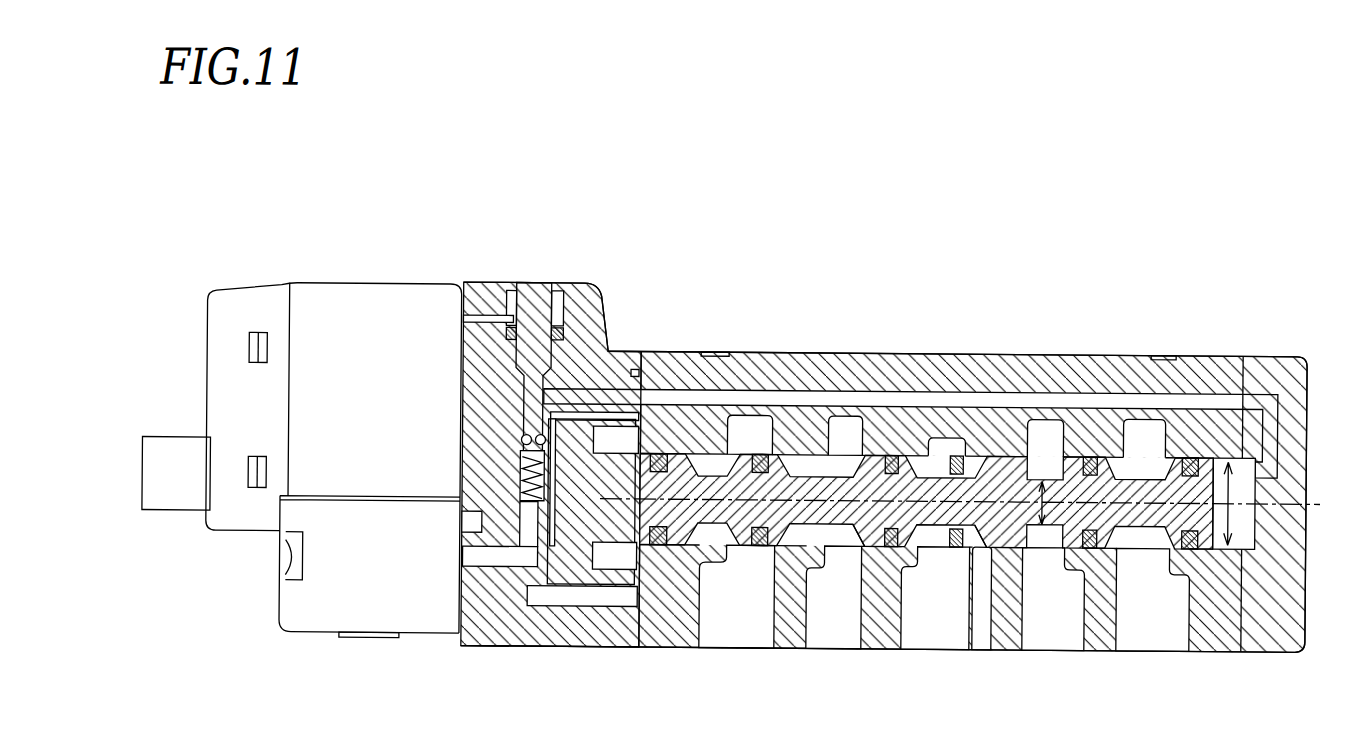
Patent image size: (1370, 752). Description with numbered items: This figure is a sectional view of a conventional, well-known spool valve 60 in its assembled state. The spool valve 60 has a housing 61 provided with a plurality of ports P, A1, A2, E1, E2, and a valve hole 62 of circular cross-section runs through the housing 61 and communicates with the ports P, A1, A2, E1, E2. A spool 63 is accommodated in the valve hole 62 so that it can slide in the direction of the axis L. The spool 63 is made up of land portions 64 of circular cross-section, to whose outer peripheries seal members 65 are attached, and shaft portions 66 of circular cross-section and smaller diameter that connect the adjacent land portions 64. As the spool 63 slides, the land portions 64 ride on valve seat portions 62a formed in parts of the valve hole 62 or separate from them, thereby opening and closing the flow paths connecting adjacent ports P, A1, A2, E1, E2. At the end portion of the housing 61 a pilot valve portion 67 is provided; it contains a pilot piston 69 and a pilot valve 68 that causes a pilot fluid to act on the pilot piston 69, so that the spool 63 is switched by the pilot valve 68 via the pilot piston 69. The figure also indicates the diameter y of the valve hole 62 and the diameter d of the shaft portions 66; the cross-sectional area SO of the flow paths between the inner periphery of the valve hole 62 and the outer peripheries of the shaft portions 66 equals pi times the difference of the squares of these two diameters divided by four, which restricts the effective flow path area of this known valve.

The spool valve 60 is at (1165, 115).
The housing 61 is at (948, 362).
The valve hole 62 is at (1012, 465).
The valve seat portions 62a is at (858, 535).
The spool 63 is at (1142, 462).
The land portions 64 is at (746, 454).
The seal members 65 is at (763, 454).
The shaft portions 66 is at (807, 507).
The pilot valve portion 67 is at (391, 237).
The pilot valve 68 is at (326, 308).
The pilot piston 69 is at (610, 518).
The port E1 is at (732, 640).
The port A1 is at (832, 640).
The port P is at (928, 638).
The cross-sectional area of the flow paths SO is at (1003, 642).
The port A2 is at (1060, 637).
The port E2 is at (1158, 636).
The axis L is at (971, 502).
The diameter of the valve hole y is at (1235, 526).
The diameter of the shaft portions d is at (1041, 542).